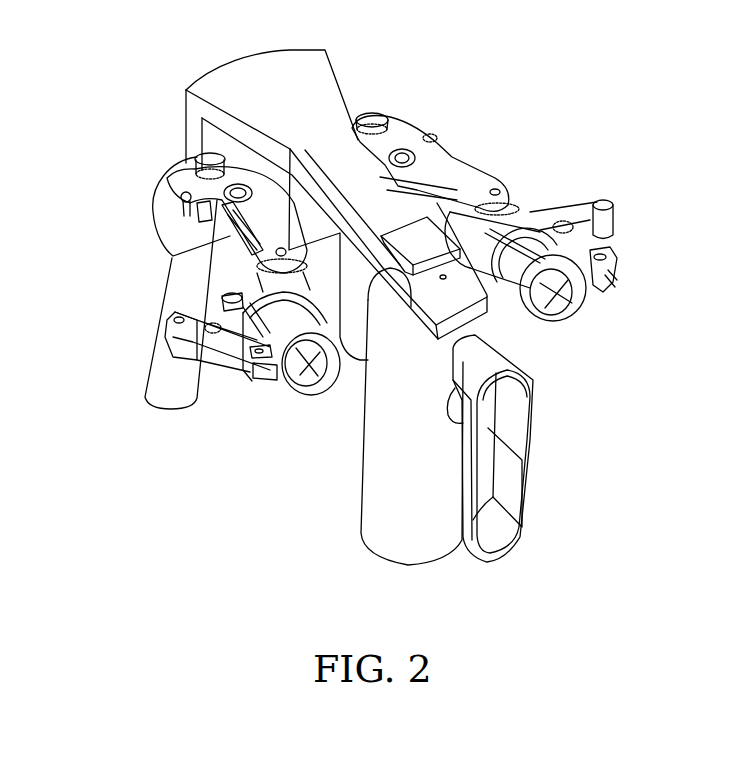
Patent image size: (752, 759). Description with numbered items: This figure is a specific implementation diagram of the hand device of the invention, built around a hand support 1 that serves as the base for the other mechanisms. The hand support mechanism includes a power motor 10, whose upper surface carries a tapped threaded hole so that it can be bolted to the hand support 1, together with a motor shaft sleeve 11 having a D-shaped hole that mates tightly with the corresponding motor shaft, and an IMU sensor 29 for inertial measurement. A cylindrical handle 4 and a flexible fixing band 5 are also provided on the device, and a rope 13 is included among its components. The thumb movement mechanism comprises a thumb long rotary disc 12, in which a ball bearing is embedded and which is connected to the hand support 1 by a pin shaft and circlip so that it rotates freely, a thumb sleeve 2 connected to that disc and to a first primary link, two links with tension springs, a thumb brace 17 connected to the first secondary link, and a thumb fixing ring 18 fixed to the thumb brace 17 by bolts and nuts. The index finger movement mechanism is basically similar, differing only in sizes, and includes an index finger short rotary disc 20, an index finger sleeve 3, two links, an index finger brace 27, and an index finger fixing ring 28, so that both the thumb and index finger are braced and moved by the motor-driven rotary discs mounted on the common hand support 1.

The hand support 1 is at (223, 67).
The thumb sleeve 2 is at (235, 275).
The index finger sleeve 3 is at (508, 227).
The cylindrical handle 4 is at (423, 540).
The flexible fixing band 5 is at (543, 450).
The power motor 10 is at (148, 362).
The shaft sleeve 11 is at (197, 160).
The long rotary disc 12 is at (248, 228).
The rope 13 is at (187, 207).
The thumb brace mechanism 17 is at (290, 398).
The thumb fixing ring 18 is at (328, 357).
The short rotary disc 20 is at (412, 138).
The index finger brace 27 is at (590, 288).
The index finger fixing ring 28 is at (555, 297).
The IMU sensor 29 is at (423, 247).